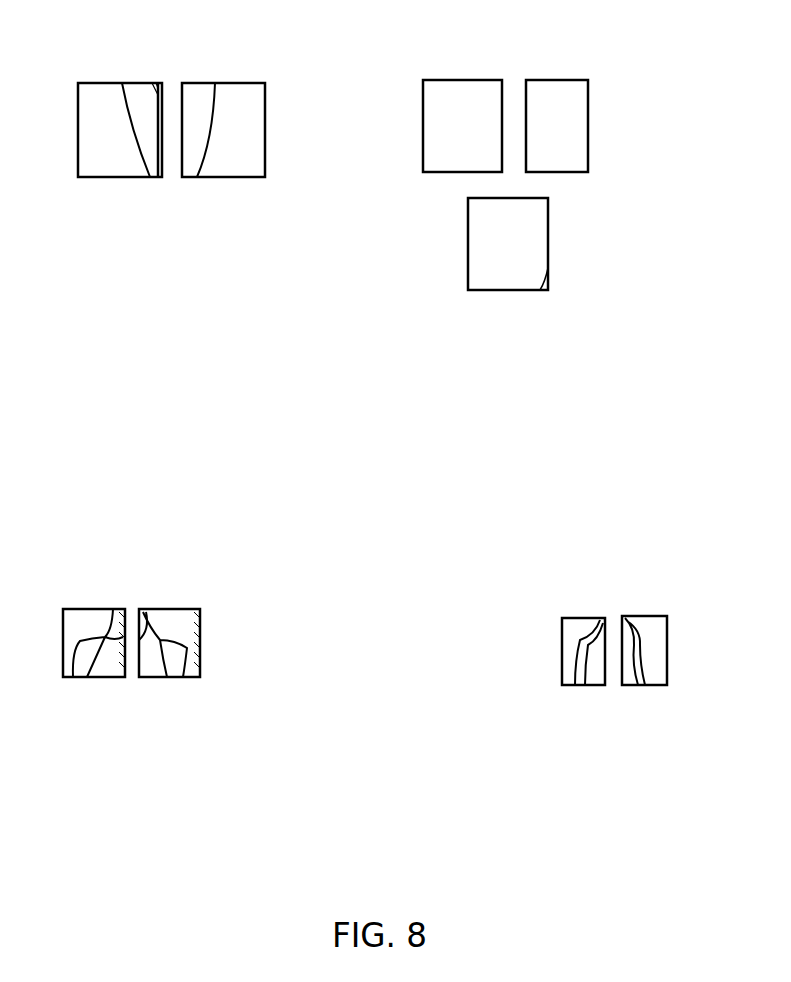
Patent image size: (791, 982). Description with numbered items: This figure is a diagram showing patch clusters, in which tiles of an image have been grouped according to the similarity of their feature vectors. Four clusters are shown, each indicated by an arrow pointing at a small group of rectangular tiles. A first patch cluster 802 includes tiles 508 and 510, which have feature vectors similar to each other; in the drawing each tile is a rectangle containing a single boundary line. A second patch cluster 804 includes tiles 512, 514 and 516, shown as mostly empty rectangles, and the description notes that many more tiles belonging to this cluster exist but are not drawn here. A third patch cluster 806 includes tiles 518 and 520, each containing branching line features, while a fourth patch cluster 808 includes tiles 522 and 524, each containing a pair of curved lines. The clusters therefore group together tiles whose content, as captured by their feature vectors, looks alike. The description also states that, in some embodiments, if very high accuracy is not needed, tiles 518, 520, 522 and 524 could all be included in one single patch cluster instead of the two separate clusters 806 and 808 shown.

The tile 508 is at (114, 83).
The tile 510 is at (227, 83).
The tile 512 is at (448, 80).
The tile 514 is at (545, 80).
The tile 516 is at (517, 290).
The tile 518 is at (92, 609).
The tile 520 is at (172, 609).
The tile 522 is at (575, 618).
The tile 524 is at (653, 616).
The patch cluster 802 is at (171, 164).
The patch cluster 804 is at (497, 240).
The patch cluster 806 is at (131, 708).
The patch cluster 808 is at (610, 705).